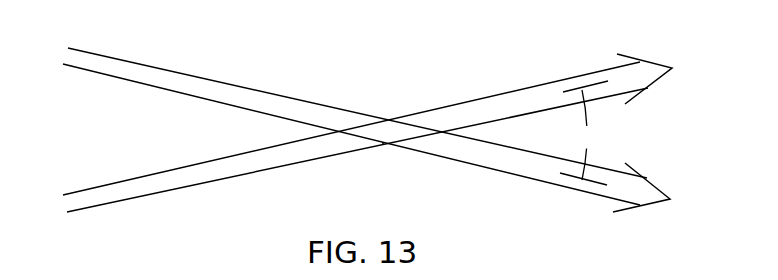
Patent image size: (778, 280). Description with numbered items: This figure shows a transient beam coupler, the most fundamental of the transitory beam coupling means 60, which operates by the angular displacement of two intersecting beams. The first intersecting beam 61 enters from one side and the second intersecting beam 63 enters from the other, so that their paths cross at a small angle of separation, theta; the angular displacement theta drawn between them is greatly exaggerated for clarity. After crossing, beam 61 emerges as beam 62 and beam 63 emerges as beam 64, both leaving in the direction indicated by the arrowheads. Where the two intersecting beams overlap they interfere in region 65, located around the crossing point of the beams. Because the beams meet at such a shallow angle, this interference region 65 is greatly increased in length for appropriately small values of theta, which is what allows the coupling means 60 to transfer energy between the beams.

The transitory beam coupling means 60 is at (343, 84).
The intersecting beam 61 is at (207, 78).
The emerging beam 62 is at (495, 172).
The intersecting beam 63 is at (218, 180).
The emerging beam 64 is at (520, 90).
The interference region 65 is at (381, 133).